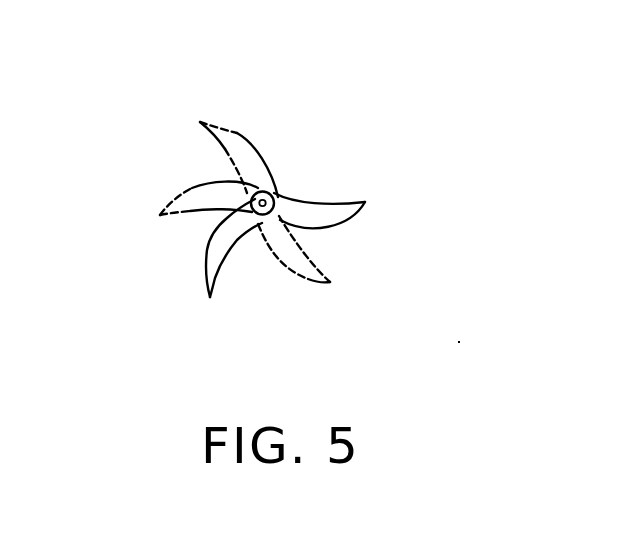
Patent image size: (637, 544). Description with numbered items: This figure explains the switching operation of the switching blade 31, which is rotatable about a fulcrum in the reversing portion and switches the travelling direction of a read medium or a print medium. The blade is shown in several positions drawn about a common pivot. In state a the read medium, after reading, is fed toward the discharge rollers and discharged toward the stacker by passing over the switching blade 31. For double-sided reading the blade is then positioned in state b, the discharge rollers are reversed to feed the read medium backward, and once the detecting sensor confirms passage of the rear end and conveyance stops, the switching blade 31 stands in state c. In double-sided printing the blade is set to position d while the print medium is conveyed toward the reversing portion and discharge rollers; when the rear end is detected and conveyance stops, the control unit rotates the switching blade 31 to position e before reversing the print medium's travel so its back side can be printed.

The switching blade 31 is at (307, 199).
The state a is at (360, 201).
The state b is at (241, 138).
The state c is at (207, 250).
The position d is at (309, 280).
The position e is at (192, 187).